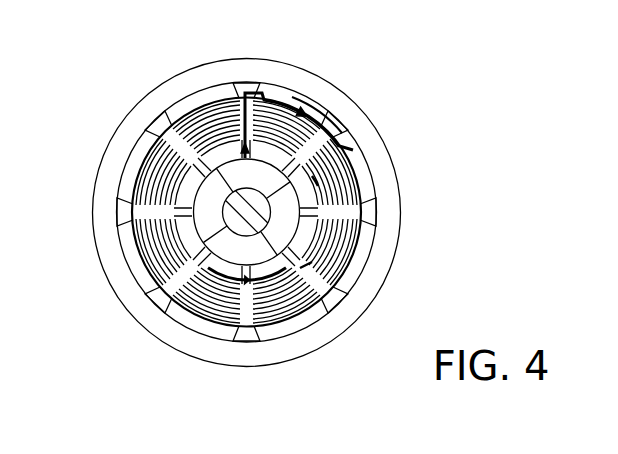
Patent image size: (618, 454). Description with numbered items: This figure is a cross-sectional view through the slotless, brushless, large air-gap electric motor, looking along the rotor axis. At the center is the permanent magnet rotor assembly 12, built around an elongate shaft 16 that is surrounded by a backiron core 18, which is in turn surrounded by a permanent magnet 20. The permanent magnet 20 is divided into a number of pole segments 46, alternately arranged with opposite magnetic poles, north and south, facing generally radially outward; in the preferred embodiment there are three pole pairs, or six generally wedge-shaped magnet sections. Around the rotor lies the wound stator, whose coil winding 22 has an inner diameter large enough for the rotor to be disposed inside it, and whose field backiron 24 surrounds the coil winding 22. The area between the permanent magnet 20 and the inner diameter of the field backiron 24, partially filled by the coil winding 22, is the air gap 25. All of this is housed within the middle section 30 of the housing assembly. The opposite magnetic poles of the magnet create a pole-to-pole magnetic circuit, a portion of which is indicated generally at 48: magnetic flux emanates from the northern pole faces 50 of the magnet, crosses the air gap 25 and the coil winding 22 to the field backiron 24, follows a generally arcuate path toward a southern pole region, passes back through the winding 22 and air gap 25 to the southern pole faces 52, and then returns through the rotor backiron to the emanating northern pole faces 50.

The permanent magnet rotor assembly 12 is at (318, 209).
The elongate shaft 16 is at (232, 228).
The backiron core 18 is at (238, 268).
The permanent magnet 20 is at (223, 327).
The coil winding 22 is at (160, 160).
The field backiron 24 is at (184, 105).
The air gap 25 is at (172, 206).
The middle section 30 is at (270, 73).
The pole segments 46 is at (300, 318).
The pole-to-pole magnetic circuit 48 is at (345, 127).
The northern pole faces 50 is at (235, 92).
The southern pole faces 52 is at (322, 186).